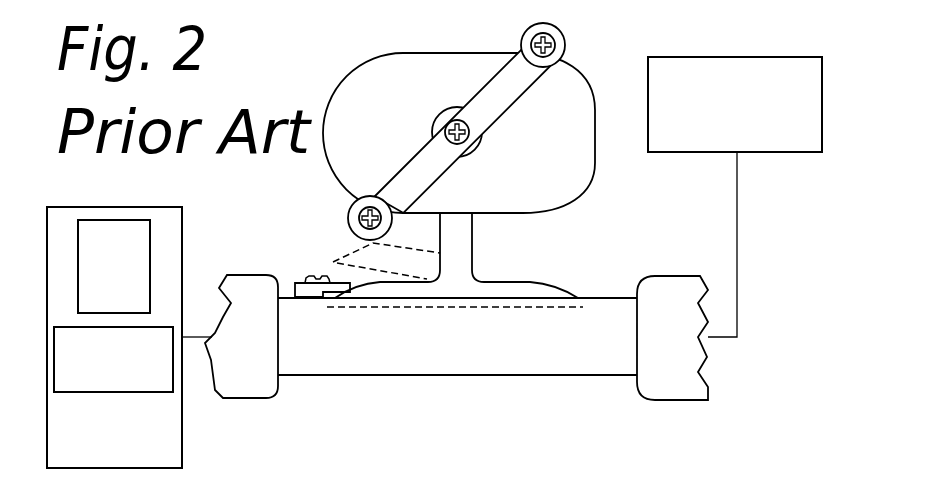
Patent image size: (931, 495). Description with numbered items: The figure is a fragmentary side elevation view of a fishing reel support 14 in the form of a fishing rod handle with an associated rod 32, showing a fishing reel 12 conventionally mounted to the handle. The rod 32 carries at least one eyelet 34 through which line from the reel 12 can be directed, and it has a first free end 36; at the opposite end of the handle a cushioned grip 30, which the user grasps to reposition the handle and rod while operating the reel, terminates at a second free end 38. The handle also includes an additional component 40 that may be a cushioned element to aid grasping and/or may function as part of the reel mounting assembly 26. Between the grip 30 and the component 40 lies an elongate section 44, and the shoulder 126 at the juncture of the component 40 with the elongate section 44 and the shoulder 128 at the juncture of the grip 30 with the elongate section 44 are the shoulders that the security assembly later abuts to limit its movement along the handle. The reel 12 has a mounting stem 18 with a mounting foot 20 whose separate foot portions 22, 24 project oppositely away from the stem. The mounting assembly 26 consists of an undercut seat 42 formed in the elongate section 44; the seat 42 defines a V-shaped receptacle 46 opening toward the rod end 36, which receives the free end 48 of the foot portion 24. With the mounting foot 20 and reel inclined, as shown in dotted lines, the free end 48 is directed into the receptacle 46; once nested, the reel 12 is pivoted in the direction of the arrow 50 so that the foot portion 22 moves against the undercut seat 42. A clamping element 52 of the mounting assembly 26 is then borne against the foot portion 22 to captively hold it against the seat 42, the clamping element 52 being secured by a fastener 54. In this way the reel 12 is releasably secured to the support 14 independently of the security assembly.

The fishing reel 12 is at (572, 104).
The fishing reel support 14 is at (625, 328).
The mounting stem 18 is at (474, 252).
The mounting foot 20 is at (405, 260).
The foot portion 22 is at (380, 292).
The foot portion 24 is at (575, 300).
The mounting assembly 26 is at (321, 265).
The cushioned grip 30 is at (694, 290).
The rod 32 is at (123, 458).
The eyelet 34 is at (125, 382).
The first free end 36 is at (123, 305).
The second free end 38 is at (746, 140).
The additional component 40 is at (237, 282).
The undercut seat 42 is at (460, 307).
The elongate section 44 is at (430, 350).
The V-shaped receptacle 46 is at (563, 330).
The free end 48 is at (575, 318).
The arrow 50 is at (417, 253).
The clamping element 52 is at (318, 292).
The fastener 54 is at (308, 276).
The shoulder 126 is at (279, 293).
The shoulder 128 is at (637, 355).